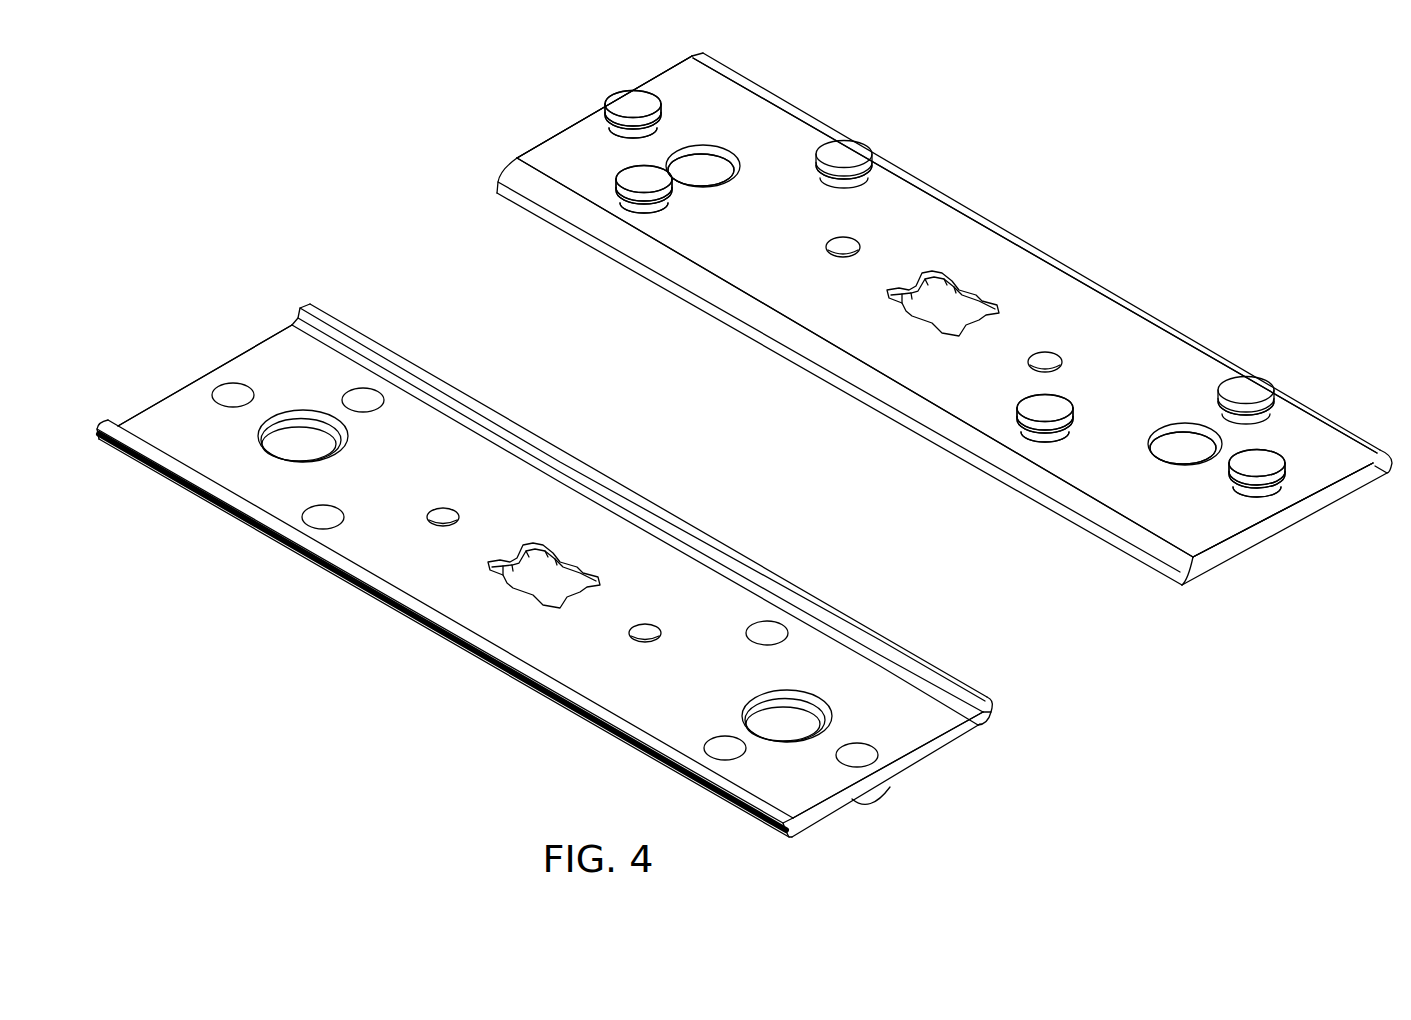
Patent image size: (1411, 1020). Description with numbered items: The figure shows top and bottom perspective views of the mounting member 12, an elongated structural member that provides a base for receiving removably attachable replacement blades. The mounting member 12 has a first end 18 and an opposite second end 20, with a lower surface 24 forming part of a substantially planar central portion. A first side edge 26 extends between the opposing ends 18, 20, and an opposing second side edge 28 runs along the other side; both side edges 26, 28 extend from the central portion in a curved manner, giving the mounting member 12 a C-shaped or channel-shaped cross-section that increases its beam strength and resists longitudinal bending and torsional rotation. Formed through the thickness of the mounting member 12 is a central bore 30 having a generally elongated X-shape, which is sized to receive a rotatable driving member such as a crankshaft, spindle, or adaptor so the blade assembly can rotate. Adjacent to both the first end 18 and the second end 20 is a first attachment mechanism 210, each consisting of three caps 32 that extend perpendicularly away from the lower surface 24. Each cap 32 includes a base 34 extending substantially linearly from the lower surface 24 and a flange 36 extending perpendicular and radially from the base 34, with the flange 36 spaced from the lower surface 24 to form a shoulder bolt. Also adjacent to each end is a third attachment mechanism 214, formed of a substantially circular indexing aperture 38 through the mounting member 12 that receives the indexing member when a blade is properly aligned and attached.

The mounting member 12 is at (130, 349).
The first end 18 is at (236, 352).
The second end 20 is at (920, 760).
The lower surface 24 is at (1140, 365).
The first side edge 26 is at (345, 590).
The second side edge 28 is at (488, 405).
The central bore 30 is at (555, 580).
The cap 32 is at (630, 112).
The base 34 is at (852, 188).
The flange 36 is at (833, 153).
The indexing aperture 38 is at (310, 443).
The first attachment mechanism 210 is at (652, 158).
The third attachment mechanism 214 is at (697, 174).